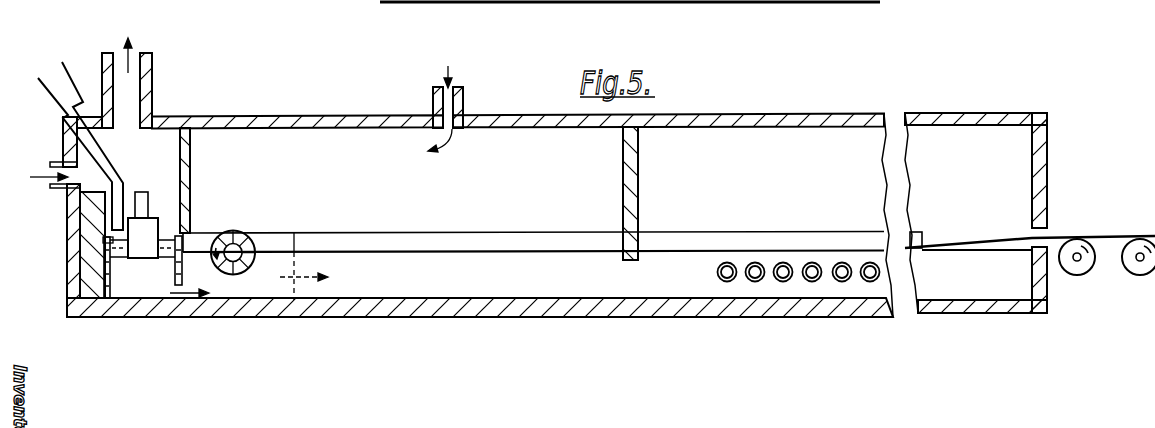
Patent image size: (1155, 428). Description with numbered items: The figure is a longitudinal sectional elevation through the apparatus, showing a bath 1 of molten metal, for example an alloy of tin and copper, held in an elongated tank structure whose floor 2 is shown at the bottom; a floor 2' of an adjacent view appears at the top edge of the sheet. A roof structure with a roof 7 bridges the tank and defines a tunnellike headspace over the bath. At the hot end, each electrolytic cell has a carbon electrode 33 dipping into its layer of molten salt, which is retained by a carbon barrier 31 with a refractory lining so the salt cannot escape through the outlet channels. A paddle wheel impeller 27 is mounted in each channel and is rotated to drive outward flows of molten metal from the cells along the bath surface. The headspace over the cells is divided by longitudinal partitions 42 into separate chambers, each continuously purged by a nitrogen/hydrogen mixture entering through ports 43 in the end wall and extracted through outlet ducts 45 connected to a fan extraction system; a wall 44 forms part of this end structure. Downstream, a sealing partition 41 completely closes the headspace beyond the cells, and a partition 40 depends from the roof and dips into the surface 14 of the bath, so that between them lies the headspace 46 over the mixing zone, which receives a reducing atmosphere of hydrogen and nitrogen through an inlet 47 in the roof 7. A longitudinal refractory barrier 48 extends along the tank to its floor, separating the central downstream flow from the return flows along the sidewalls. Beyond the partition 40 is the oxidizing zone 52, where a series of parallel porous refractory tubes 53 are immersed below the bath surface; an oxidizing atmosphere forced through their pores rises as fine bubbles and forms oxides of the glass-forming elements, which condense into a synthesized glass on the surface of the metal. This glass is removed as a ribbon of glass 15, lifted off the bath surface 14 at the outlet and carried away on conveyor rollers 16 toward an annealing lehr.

The bath of molten metal 1 is at (306, 278).
The floor 2 is at (480, 293).
The bottom wall (adjacent figure) 2' is at (630, 17).
The roof 7 is at (490, 115).
The surface level of the molten metal 14 is at (482, 250).
The ribbon of glass 15 is at (1107, 236).
The conveyor rollers 16 is at (1134, 237).
The paddle wheel impeller 27 is at (234, 240).
The carbon barrier 31 is at (110, 286).
The carbon electrode 33 is at (147, 237).
The partition 40 is at (623, 202).
The sealing partition 41 is at (197, 128).
The longitudinal partitions 42 is at (100, 146).
The ports 43 is at (63, 161).
The end wall 44 is at (73, 210).
The outlet ducts 45 is at (148, 104).
The headspace over the mixing zone 46 is at (228, 137).
The inlet 47 is at (434, 93).
The longitudinal refractory barrier 48 is at (417, 240).
The oxidizing zone 52 is at (805, 167).
The porous refractory tubes 53 is at (783, 263).